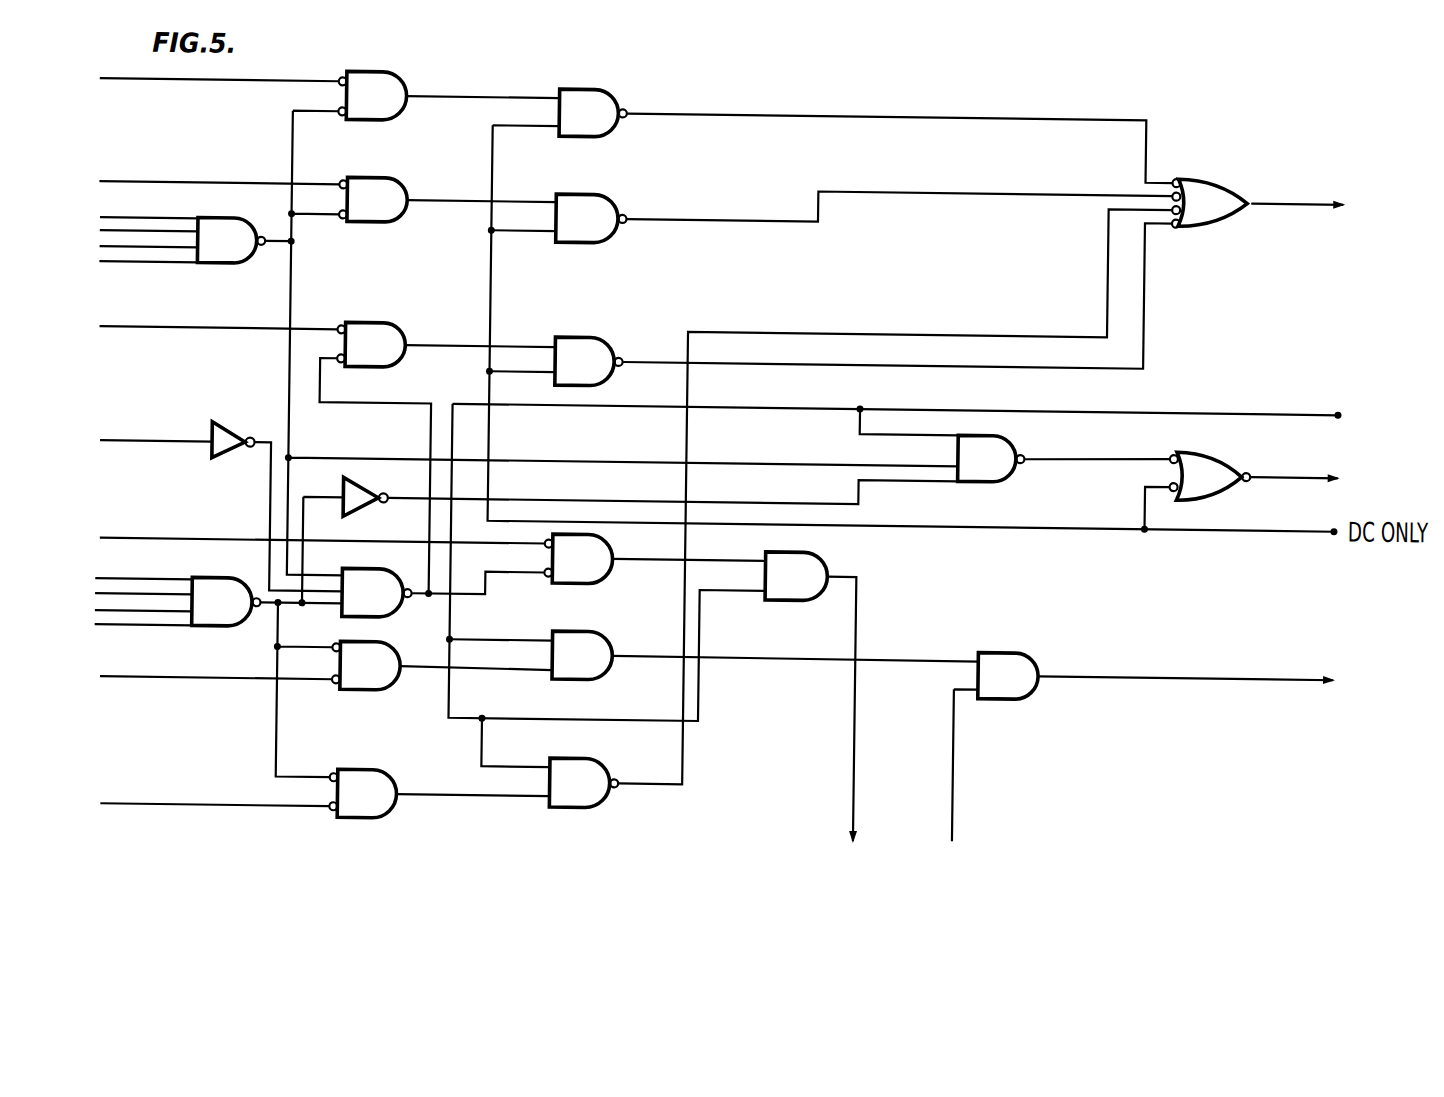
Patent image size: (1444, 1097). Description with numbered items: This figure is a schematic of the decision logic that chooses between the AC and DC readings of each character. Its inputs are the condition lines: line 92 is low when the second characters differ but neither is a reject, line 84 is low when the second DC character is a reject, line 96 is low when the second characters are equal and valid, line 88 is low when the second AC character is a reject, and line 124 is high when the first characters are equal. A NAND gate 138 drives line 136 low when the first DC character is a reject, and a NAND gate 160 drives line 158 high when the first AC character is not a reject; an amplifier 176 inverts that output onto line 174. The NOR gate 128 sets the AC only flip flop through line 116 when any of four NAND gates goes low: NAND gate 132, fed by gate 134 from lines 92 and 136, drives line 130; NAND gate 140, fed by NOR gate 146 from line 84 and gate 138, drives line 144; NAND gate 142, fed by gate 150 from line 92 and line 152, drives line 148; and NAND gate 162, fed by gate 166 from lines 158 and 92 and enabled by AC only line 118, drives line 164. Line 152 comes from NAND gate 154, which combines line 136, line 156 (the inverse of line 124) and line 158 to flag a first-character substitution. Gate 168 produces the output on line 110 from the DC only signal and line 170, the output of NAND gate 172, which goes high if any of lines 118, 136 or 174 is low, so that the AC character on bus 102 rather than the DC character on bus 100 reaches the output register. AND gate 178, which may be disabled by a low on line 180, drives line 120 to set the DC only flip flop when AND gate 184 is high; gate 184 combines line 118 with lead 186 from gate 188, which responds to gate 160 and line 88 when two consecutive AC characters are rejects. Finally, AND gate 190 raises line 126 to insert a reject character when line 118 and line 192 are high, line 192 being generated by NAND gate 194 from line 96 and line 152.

The line 84 is at (201, 189).
The line 88 is at (125, 684).
The line 92 is at (180, 87).
The line 96 is at (134, 545).
The bus 100 is at (148, 271).
The bus 102 is at (162, 586).
The line 110 is at (1270, 470).
The line 116 is at (1285, 192).
The AC only line 118 is at (1241, 406).
The line 120 is at (1135, 672).
The line 124 is at (178, 448).
The line 126 is at (858, 743).
The NOR gate 128 is at (1207, 172).
The line 130 is at (711, 114).
The NAND gate 132 is at (586, 91).
The gate 134 is at (386, 76).
The line 136 is at (289, 272).
The NAND gate 138 is at (220, 271).
The NAND gate 140 is at (557, 196).
The NAND gate 142 is at (587, 339).
The line 144 is at (815, 190).
The NOR gate 146 is at (402, 191).
The line 148 is at (649, 363).
The gate 150 is at (358, 327).
The line 152 is at (416, 601).
The NAND gate 154 is at (367, 573).
The line 156 is at (271, 509).
The line 158 is at (282, 636).
The NAND gate 160 is at (214, 634).
The NAND gate 162 is at (584, 761).
The line 164 is at (1105, 300).
The gate 166 is at (354, 774).
The gate 168 is at (1216, 444).
The line 170 is at (1112, 452).
The NAND gate 172 is at (965, 479).
The line 174 is at (827, 502).
The amplifier 176 is at (368, 496).
The AND gate 178 is at (997, 649).
The line 180 is at (957, 745).
The AND gate 184 is at (583, 633).
The lead 186 is at (490, 674).
The gate 188 is at (395, 692).
The AND gate 190 is at (801, 551).
The line 192 is at (736, 559).
The NAND gate 194 is at (610, 541).